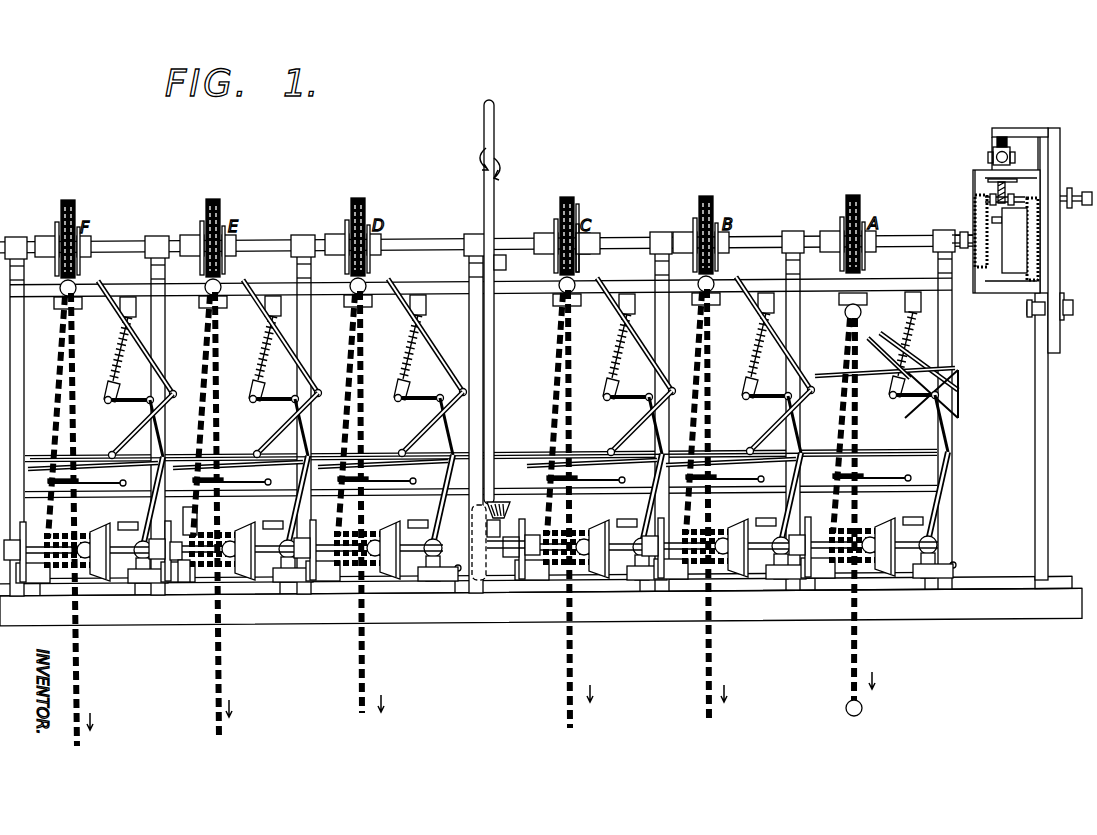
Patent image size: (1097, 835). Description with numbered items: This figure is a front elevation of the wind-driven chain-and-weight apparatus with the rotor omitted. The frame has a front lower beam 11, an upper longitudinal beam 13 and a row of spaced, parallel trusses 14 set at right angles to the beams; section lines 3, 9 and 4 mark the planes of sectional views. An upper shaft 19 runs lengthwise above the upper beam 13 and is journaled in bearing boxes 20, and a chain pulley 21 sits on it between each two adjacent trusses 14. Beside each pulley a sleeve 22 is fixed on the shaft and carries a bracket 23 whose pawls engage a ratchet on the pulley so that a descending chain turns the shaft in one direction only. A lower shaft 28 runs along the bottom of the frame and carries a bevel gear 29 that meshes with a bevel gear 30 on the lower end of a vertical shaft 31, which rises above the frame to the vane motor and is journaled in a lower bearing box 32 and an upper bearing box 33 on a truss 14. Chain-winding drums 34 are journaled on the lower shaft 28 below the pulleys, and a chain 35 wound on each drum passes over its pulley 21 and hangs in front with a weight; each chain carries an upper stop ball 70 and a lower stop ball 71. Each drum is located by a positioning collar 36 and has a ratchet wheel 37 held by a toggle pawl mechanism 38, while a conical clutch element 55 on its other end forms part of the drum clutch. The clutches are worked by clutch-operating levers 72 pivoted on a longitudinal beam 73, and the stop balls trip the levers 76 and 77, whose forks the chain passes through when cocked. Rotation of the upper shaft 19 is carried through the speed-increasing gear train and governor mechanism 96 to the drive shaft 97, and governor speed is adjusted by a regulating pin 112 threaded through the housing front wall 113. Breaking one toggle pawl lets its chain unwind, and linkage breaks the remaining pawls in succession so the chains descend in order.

The lower beam 11 is at (786, 325).
The upper longitudinal beam 13 is at (515, 286).
The trusses 14 is at (468, 323).
The upper shaft 19 is at (622, 241).
The bearing boxes 20 is at (661, 237).
The chain pulleys 21 is at (222, 201).
The sleeve 22 is at (588, 233).
The bracket 23 is at (578, 221).
The lower shaft 28 is at (520, 551).
The bevel gear 29 is at (466, 520).
The bevel gear 30 is at (500, 511).
The vertical shaft 31 is at (495, 428).
The lower bearing box 32 is at (500, 529).
The upper bearing box 33 is at (506, 264).
The chain-winding drums 34 is at (104, 532).
The chain 35 is at (70, 640).
The positioning collar 36 is at (176, 564).
The ratchet wheel 37 is at (188, 572).
The pawl mechanism 38 is at (190, 520).
The conical clutch element 55 is at (606, 528).
The stop ball 70 is at (843, 313).
The stop ball 71 is at (845, 710).
The clutch-operating lever 72 is at (110, 429).
The longitudinally-extending beam 73 is at (518, 455).
The trip lever 76 is at (130, 358).
The trip lever 77 is at (104, 463).
The speed-increasing gear train and governor mechanism 96 is at (972, 173).
The drive shaft 97 is at (1076, 194).
The regulating pin 112 is at (1070, 298).
The front wall 113 is at (1058, 258).
The section line 3- 3 is at (457, 222).
The section line 9- 9 is at (318, 276).
The section line 4- 4 is at (955, 370).